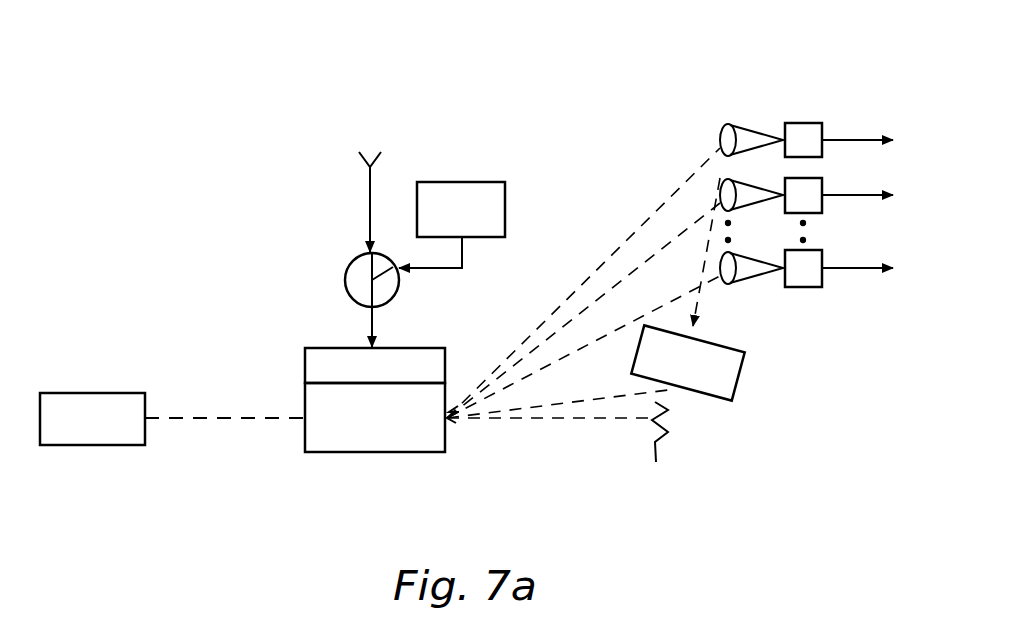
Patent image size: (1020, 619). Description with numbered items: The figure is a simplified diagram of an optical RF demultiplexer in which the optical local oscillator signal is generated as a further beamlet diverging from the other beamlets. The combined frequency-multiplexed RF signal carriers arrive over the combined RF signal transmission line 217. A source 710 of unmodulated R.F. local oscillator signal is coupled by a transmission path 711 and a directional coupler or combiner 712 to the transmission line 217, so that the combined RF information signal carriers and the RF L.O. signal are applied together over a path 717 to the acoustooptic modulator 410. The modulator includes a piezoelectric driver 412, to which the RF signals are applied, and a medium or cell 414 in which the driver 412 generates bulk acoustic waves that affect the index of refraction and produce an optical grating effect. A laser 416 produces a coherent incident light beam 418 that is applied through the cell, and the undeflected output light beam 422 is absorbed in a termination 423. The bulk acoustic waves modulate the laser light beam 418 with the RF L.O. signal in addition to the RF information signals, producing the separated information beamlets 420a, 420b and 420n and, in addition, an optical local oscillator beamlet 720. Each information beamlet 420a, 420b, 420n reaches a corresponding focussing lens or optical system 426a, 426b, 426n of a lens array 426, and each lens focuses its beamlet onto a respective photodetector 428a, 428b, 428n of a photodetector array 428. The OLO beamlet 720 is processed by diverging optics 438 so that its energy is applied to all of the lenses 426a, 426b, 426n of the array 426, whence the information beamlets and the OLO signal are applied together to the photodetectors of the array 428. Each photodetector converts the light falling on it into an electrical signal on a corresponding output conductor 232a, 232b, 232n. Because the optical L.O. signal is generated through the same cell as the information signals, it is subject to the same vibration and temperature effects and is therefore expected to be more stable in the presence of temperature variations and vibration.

The signal path 217 is at (370, 205).
The directional coupler or combiner 712 is at (345, 282).
The source of unmodulated R.F. local oscillator signal 710 is at (502, 172).
The transmission path 711 is at (451, 270).
The path 717 is at (372, 322).
The acoustooptic cell 410 is at (350, 438).
The piezoelectric driver 412 is at (305, 366).
The medium 414 is at (305, 445).
The laser 416 is at (90, 447).
The incident light beam 418 is at (205, 418).
The light beamlet 420a is at (639, 224).
The light beamlet 420b is at (607, 286).
The light beamlet 420n is at (557, 340).
The OLO beamlet 720 is at (574, 403).
The output light beam 422 is at (553, 420).
The termination 423 is at (668, 434).
The diverging optics 438 is at (735, 374).
The lens array 426 is at (728, 112).
The focussing lens or optical system 426a is at (721, 138).
The focussing lens or optical system 426b is at (718, 196).
The focussing lens or optical system 426n is at (722, 280).
The photodetector array 428 is at (803, 112).
The photodetector 428a is at (807, 122).
The photodetector 428b is at (822, 180).
The photodetector 428n is at (803, 287).
The output conductor 232a is at (862, 140).
The output conductor 232b is at (860, 197).
The output conductor 232n is at (860, 270).